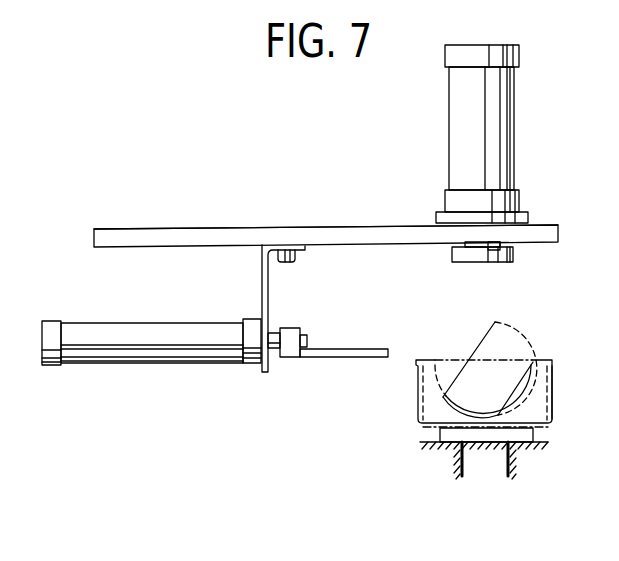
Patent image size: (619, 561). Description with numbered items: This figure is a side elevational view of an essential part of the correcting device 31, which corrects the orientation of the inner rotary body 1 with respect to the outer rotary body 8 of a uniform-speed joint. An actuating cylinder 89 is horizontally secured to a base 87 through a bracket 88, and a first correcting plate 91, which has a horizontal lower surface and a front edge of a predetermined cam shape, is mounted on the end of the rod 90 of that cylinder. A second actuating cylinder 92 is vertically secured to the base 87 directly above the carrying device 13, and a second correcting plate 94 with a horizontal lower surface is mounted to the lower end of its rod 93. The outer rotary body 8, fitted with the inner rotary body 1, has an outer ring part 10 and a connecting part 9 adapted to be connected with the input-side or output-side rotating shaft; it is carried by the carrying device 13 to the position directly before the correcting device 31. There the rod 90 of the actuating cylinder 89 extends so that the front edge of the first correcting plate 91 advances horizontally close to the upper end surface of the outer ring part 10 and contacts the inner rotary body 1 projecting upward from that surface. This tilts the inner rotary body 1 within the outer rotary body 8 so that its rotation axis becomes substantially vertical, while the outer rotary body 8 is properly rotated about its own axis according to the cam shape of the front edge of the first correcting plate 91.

The correcting device 31 is at (318, 202).
The base 87 is at (210, 231).
The bracket 88 is at (264, 290).
The actuating cylinder 89 is at (133, 331).
The rod 90 is at (277, 349).
The first correcting plate 91 is at (345, 354).
The actuating cylinder 92 is at (456, 117).
The rod 93 is at (500, 245).
The second correcting plate 94 is at (470, 256).
The inner rotary body 1 is at (517, 340).
The outer rotary body 8 is at (558, 358).
The outer ring part 10 is at (548, 417).
The carrying device 13 is at (431, 437).
The connecting part 9 is at (498, 460).